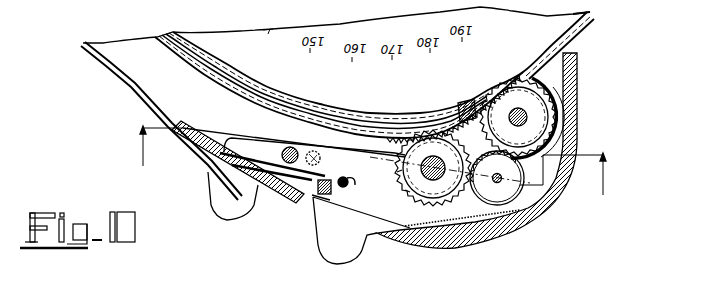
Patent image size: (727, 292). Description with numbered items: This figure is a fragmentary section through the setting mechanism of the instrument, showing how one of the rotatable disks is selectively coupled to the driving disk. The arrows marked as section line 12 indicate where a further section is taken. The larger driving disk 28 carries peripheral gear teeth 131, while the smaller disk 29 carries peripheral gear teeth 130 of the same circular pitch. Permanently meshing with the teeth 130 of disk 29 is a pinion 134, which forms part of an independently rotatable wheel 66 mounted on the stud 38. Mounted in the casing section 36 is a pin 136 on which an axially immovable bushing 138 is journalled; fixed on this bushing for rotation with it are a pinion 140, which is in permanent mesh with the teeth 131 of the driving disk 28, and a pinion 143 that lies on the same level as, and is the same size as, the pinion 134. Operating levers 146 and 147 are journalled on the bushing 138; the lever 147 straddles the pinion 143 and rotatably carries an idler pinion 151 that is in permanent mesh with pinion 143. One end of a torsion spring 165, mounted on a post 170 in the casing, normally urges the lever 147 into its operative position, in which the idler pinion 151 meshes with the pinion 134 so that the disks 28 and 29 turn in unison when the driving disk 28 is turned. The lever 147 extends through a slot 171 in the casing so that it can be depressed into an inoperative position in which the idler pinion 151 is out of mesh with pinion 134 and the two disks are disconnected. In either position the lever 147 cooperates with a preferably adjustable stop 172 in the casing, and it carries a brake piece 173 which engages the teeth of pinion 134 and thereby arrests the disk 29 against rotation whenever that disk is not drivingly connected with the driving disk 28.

The section line 12 is at (372, 168).
The disk 28 is at (586, 27).
The disk 29 is at (575, 43).
The casing section 36 is at (127, 90).
The stud 38 is at (520, 112).
The wheel 66 is at (556, 92).
The peripheral gear teeth 130 is at (520, 71).
The peripheral gear teeth 131 is at (395, 153).
The pinion 134 is at (543, 120).
The pin 136 is at (433, 168).
The bushing 138 is at (446, 151).
The pinion 140 is at (397, 172).
The pinion 143 is at (405, 190).
The operating lever 146 is at (226, 216).
The operating lever 147 is at (375, 227).
The idler pinion 151 is at (512, 190).
The torsion spring 165 is at (332, 158).
The post 170 is at (280, 154).
The slot 171 is at (298, 203).
The stop 172 is at (326, 194).
The brake piece 173 is at (466, 102).